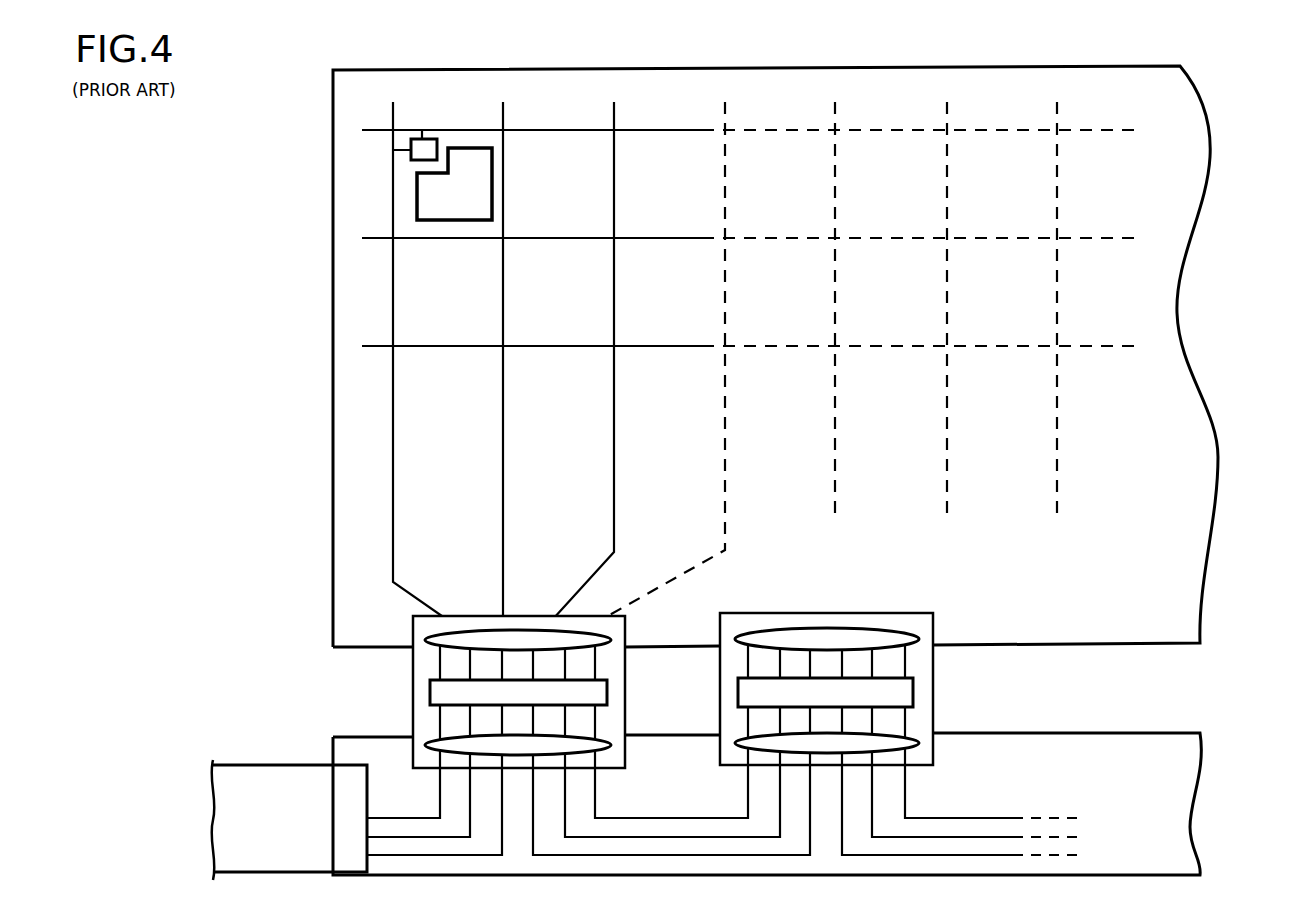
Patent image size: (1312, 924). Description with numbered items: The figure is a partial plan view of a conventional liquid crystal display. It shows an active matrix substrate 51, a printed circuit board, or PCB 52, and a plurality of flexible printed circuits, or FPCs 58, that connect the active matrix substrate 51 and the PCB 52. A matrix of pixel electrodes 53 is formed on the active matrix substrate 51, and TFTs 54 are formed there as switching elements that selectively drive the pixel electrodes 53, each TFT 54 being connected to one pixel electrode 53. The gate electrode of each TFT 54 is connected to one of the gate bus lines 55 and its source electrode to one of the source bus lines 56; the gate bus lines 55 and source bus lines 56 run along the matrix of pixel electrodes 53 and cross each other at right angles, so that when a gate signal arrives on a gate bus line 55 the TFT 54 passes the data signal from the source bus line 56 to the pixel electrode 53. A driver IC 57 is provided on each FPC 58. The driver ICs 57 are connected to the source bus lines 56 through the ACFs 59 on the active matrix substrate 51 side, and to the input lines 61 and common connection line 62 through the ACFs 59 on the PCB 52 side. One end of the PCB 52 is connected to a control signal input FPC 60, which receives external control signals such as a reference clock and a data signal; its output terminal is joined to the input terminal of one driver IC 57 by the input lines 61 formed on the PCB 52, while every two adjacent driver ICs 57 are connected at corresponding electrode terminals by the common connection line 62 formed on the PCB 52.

The active matrix substrate 51 is at (1227, 442).
The PCB 52 is at (1232, 795).
The pixel electrode 53 is at (430, 203).
The TFT 54 is at (411, 152).
The gate bus line 55 is at (372, 130).
The source bus line 56 is at (393, 115).
The driver IC 57 is at (605, 692).
The FPC 58 is at (408, 688).
The ACF 59 is at (432, 637).
The control signal input FPC 60 is at (272, 782).
The input line 61 is at (423, 858).
The common connection line 62 is at (690, 857).